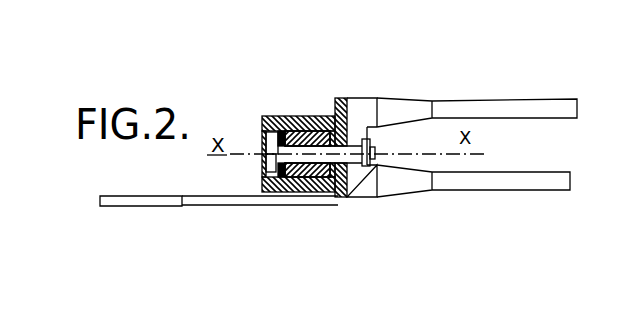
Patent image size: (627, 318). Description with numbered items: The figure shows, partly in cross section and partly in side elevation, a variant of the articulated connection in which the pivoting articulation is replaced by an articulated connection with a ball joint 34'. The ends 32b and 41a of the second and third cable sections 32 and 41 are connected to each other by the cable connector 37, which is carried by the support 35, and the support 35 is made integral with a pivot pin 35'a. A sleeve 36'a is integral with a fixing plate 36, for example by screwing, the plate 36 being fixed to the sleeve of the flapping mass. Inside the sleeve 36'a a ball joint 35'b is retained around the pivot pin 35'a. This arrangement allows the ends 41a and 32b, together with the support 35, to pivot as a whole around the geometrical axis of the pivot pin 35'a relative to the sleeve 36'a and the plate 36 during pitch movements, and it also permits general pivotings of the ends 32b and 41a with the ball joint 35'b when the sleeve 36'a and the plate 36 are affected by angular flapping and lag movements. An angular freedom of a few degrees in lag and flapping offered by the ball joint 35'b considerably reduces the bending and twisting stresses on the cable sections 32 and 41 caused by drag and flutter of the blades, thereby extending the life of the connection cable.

The second cable section 32 is at (552, 108).
The end of the second cable section 32b is at (398, 108).
The ball joint articulated connection 34' is at (277, 122).
The support 35 is at (335, 116).
The pivot pin 35'a is at (302, 95).
The ball joint 35'b is at (301, 202).
The fixing plate 36 is at (219, 181).
The sleeve 36'a is at (280, 162).
The cable connector 37 is at (366, 186).
The third cable section 41 is at (550, 181).
The end of the third cable section 41a is at (398, 185).